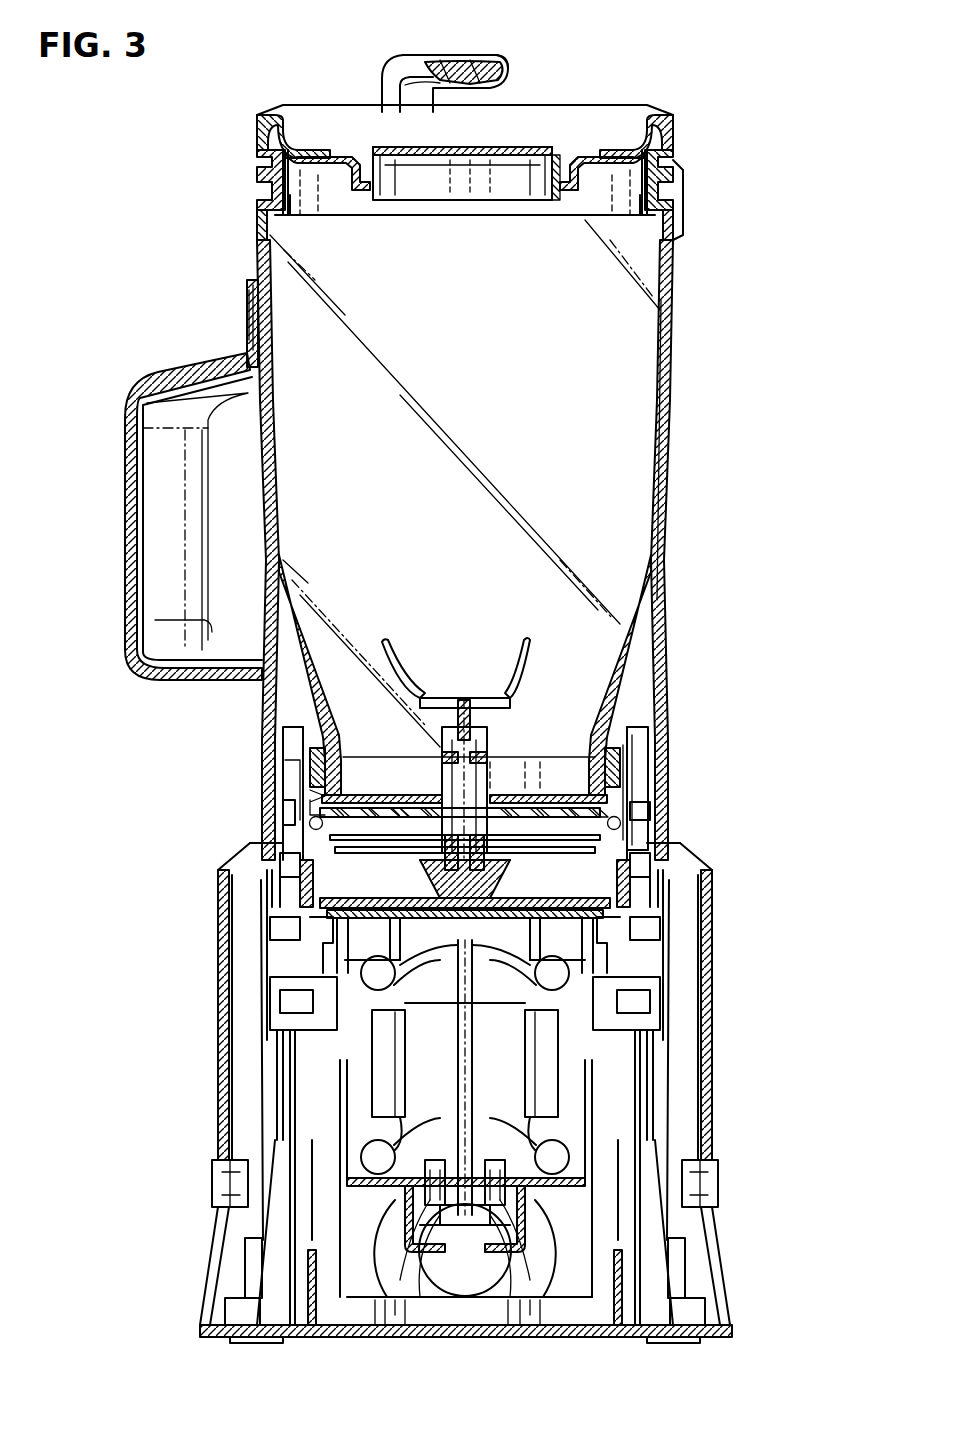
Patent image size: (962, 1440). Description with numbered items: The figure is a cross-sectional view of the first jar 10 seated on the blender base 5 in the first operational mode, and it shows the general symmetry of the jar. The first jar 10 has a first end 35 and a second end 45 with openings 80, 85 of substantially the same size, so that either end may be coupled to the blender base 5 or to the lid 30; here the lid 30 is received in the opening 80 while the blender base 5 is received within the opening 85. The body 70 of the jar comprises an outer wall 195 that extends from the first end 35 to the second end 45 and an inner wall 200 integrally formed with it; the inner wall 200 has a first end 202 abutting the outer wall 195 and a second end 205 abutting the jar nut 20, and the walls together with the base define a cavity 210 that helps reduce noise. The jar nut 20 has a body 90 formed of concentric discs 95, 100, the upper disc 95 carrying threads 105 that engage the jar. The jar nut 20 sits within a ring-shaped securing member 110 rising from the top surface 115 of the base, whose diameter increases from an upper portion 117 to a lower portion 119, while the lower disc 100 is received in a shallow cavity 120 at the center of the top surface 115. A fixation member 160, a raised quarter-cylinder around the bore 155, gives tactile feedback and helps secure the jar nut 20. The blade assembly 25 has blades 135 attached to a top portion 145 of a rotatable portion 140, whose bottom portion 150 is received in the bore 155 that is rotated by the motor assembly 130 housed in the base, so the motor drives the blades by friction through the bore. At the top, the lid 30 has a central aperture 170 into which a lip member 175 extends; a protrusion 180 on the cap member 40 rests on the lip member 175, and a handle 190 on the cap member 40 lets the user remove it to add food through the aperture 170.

The blender base 5 is at (238, 1342).
The first jar 10 is at (245, 277).
The jar nut 20 is at (660, 948).
The blade assembly 25 is at (465, 688).
The lid 30 is at (617, 95).
The first end 35 is at (679, 172).
The cap member 40 is at (368, 85).
The second end 45 is at (660, 820).
The body 70 is at (245, 337).
The opening 80 is at (630, 205).
The opening 85 is at (650, 802).
The body 90 is at (690, 858).
The disc 95 is at (620, 785).
The disc 100 is at (665, 960).
The threads 105 is at (305, 770).
The securing member 110 is at (277, 775).
The top surface 115 is at (223, 853).
The upper portion 117 is at (300, 757).
The lower portion 119 is at (297, 817).
The cavity 120 is at (350, 886).
The motor assembly 130 is at (577, 1073).
The blades 135 is at (410, 683).
The rotatable portion 140 is at (330, 900).
The top portion 145 is at (467, 783).
The bottom portion 150 is at (350, 955).
The bore 155 is at (290, 1040).
The fixation member 160 is at (655, 1000).
The aperture 170 is at (410, 182).
The lip member 175 is at (553, 197).
The protrusion 180 is at (363, 182).
The handle 190 is at (490, 58).
The outer wall 195 is at (670, 408).
The inner wall 200 is at (655, 560).
The first end 202 is at (660, 628).
The second end 205 is at (608, 743).
The cavity 210 is at (292, 650).